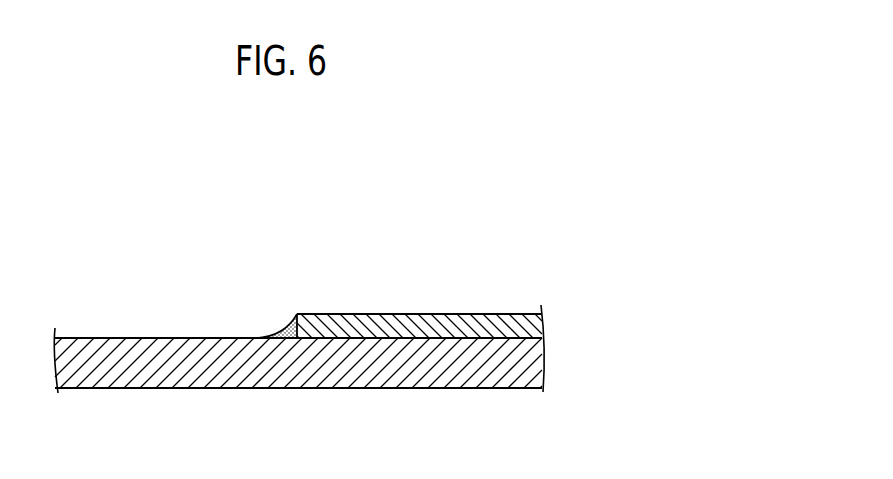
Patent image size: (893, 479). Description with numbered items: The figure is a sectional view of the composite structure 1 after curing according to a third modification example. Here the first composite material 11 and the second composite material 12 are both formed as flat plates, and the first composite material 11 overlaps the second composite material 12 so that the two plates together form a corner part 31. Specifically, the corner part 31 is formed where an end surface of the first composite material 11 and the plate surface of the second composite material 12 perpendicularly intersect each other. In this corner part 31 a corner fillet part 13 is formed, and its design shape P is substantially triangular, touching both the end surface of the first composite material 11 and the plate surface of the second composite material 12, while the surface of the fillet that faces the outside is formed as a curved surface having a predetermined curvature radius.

The composite structure 1 is at (421, 201).
The first composite material 11 is at (430, 314).
The second composite material 12 is at (420, 389).
The corner fillet part 13 is at (263, 336).
The corner part 31 is at (289, 322).
The design shape P is at (276, 326).